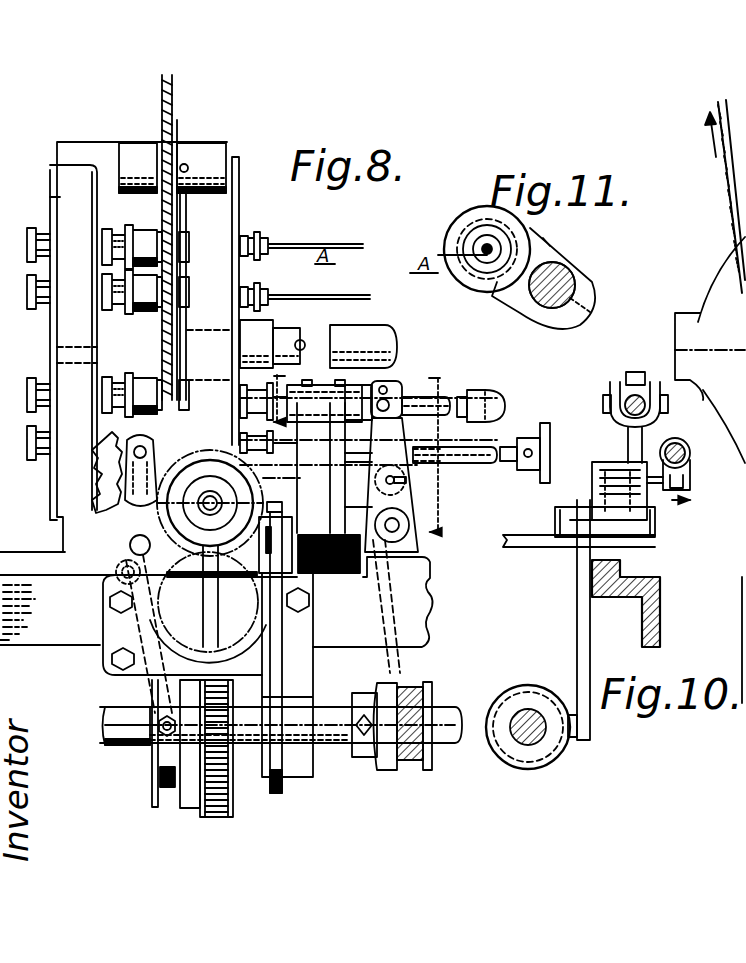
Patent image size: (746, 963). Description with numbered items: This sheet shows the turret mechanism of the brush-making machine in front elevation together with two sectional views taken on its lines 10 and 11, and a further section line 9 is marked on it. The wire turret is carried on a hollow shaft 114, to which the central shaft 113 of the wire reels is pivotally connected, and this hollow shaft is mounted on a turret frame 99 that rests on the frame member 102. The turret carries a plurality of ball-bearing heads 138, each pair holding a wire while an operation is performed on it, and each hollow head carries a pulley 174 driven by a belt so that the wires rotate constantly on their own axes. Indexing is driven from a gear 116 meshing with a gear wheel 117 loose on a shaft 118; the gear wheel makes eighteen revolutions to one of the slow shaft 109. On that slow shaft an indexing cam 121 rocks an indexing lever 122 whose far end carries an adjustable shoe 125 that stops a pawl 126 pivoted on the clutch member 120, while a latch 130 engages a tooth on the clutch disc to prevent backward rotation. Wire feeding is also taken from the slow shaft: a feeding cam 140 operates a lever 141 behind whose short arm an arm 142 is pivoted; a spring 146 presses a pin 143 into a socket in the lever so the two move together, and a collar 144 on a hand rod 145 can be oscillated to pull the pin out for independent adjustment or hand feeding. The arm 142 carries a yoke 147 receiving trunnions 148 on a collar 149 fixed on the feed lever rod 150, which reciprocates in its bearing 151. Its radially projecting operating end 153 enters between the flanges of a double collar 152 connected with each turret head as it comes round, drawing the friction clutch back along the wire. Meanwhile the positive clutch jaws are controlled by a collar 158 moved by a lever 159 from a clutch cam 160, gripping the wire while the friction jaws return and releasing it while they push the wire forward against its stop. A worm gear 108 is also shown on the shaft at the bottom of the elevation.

In FIG. 8, the section line 9- 9 is at (185, 135).
In FIG. 8, the section line 10- 10 is at (444, 451).
In FIG. 8, the section line 11- 11 is at (285, 408).
In FIG. 8, the turret frame 99 is at (52, 197).
In FIG. 8, the frame member 102 is at (432, 618).
In FIG. 10, the frame member 102 is at (644, 622).
In FIG. 8, the worm gear 108 is at (233, 805).
In FIG. 8, the shaft 109 is at (432, 712).
In FIG. 10, the shaft 109 is at (523, 745).
In FIG. 8, the central shaft 113 is at (374, 330).
In FIG. 8, the hollow shaft 114 is at (270, 332).
In FIG. 8, the gear 116 is at (258, 596).
In FIG. 8, the gear wheel 117 is at (200, 452).
In FIG. 8, the shaft 118 is at (210, 503).
In FIG. 8, the clutch member 120 is at (259, 485).
In FIG. 8, the indexing cam 121 is at (279, 767).
In FIG. 8, the indexing lever 122 is at (278, 620).
In FIG. 8, the shoe 125 is at (328, 488).
In FIG. 8, the pawl 126 is at (278, 503).
In FIG. 8, the latch 130 is at (158, 522).
In FIG. 8, the ball-bearing heads 138 is at (45, 313).
In FIG. 8, the feeding cam 140 is at (397, 768).
In FIG. 10, the feeding cam 140 is at (567, 752).
In FIG. 8, the lever 141 is at (396, 660).
In FIG. 10, the lever 141 is at (578, 662).
In FIG. 10, the arm 142 is at (672, 509).
In FIG. 8, the pin 143 is at (404, 485).
In FIG. 10, the pin 143 is at (690, 488).
In FIG. 8, the collar 144 is at (410, 473).
In FIG. 10, the collar 144 is at (688, 466).
In FIG. 8, the rod 145 is at (478, 448).
In FIG. 10, the rod 145 is at (690, 446).
In FIG. 10, the spring 146 is at (618, 466).
In FIG. 8, the yoke 147 is at (398, 431).
In FIG. 10, the yoke 147 is at (660, 422).
In FIG. 8, the trunnions 148 is at (361, 394).
In FIG. 10, the trunnions 148 is at (604, 406).
In FIG. 8, the collar 149 is at (410, 395).
In FIG. 10, the collar 149 is at (635, 384).
In FIG. 8, the feed lever rod 150 is at (470, 395).
In FIG. 11, the feed lever rod 150 is at (578, 281).
In FIG. 10, the feed lever rod 150 is at (627, 398).
In FIG. 8, the bearing 151 is at (370, 422).
In FIG. 8, the double collar 152 is at (252, 236).
In FIG. 11, the double collar 152 is at (455, 229).
In FIG. 11, the operating end 153 is at (550, 278).
In FIG. 8, the collar 158 is at (143, 224).
In FIG. 8, the lever 159 is at (155, 698).
In FIG. 8, the clutch cam 160 is at (153, 792).
In FIG. 8, the pulleys 174 is at (181, 273).